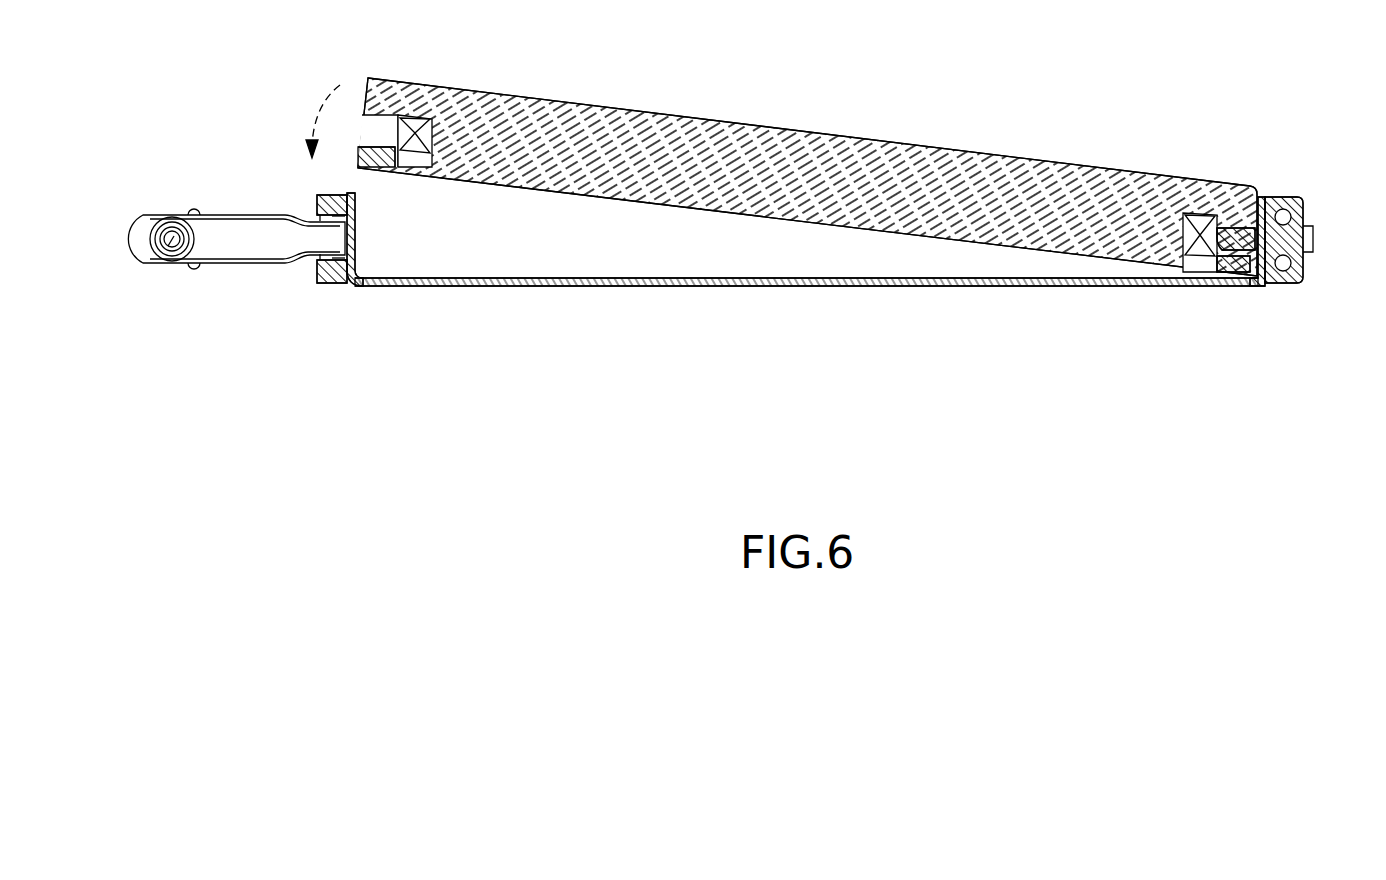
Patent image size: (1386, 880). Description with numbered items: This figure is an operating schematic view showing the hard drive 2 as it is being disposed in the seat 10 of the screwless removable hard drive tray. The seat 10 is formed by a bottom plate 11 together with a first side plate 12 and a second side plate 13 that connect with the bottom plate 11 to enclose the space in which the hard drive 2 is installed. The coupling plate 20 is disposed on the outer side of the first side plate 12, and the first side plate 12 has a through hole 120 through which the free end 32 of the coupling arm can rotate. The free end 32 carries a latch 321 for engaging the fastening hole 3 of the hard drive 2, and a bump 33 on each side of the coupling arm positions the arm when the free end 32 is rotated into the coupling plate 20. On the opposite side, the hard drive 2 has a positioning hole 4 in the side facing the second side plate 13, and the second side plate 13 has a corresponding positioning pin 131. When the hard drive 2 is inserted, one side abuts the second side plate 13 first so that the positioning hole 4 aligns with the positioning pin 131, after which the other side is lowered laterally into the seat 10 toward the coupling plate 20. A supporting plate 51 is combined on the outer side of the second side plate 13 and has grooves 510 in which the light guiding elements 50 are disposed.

The hard drive 2 is at (558, 132).
The fastening hole 3 is at (388, 128).
The positioning hole 4 is at (1215, 228).
The seat 10 is at (806, 337).
The bottom plate 11 is at (680, 282).
The first side plate 12 is at (352, 205).
The second side plate 13 is at (1282, 282).
The coupling plate 20 is at (333, 272).
The free end 32 is at (223, 234).
The bump 33 is at (196, 212).
The light guiding element 50 is at (1317, 201).
The supporting plate 51 is at (1300, 196).
The through hole 120 is at (360, 240).
The positioning pin 131 is at (1250, 278).
The latch 321 is at (168, 255).
The groove 510 is at (1276, 212).